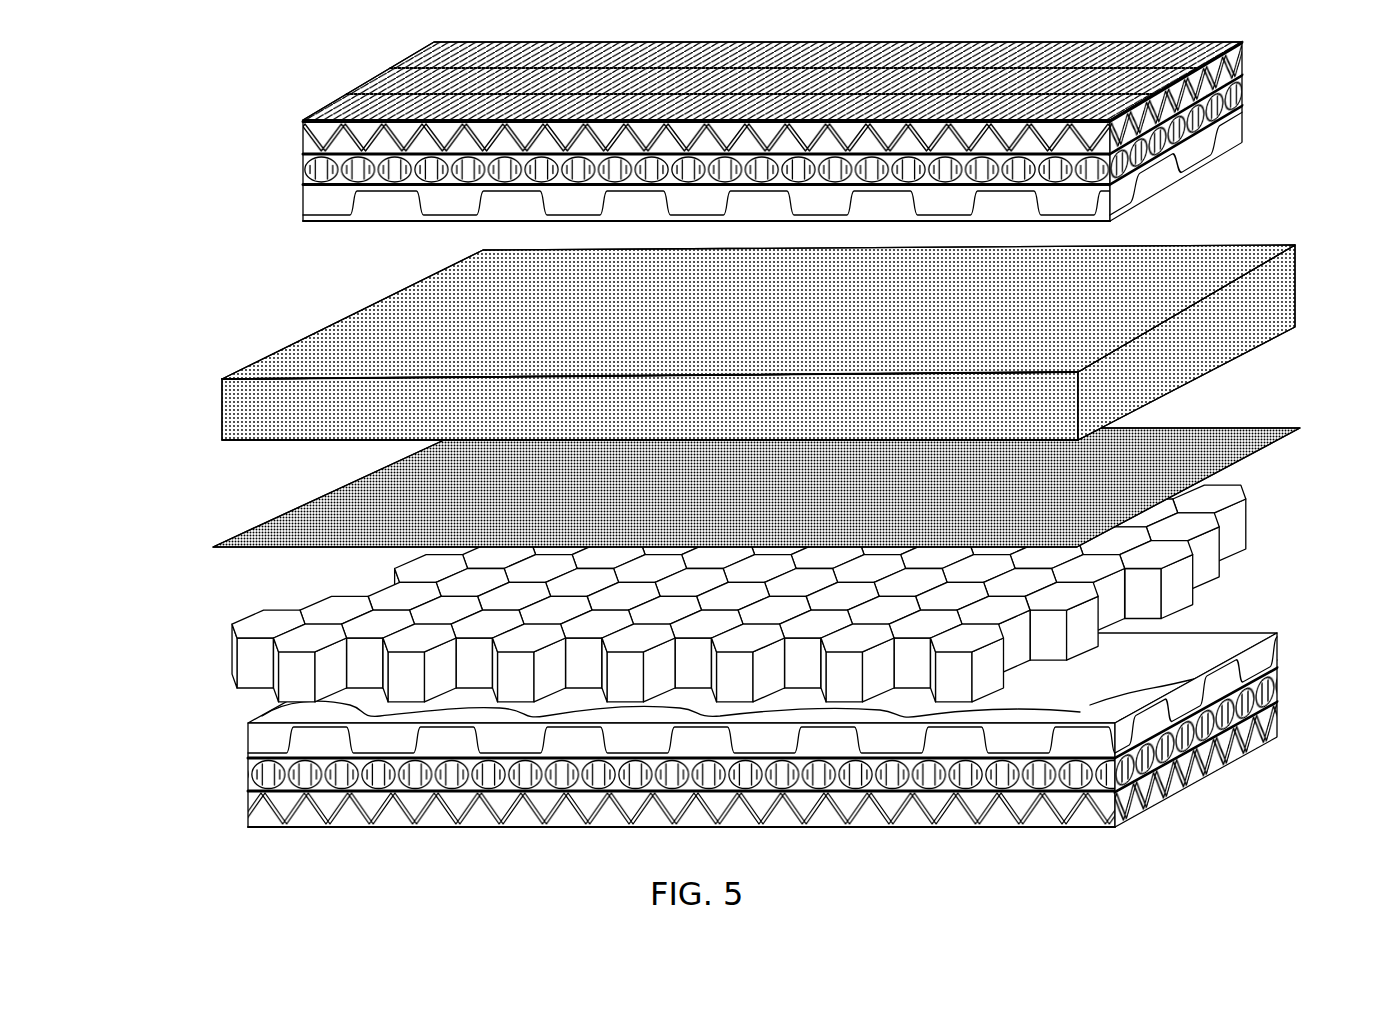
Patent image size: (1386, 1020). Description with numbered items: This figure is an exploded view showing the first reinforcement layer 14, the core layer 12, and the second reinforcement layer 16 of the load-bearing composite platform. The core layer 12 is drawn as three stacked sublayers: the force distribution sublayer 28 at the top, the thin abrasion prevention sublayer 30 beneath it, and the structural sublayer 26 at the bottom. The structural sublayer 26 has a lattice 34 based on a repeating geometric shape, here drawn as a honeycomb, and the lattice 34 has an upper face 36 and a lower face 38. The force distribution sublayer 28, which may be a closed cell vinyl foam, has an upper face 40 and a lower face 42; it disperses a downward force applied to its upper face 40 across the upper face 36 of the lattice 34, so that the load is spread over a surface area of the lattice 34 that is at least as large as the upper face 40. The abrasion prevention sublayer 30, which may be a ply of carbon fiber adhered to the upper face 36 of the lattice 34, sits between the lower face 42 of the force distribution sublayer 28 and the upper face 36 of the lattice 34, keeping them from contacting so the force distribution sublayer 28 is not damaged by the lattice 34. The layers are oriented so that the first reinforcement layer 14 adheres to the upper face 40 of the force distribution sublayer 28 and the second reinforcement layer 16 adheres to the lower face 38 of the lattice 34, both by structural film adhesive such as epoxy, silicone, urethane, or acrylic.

The core layer 12 is at (735, 434).
The first reinforcement layer 14 is at (725, 137).
The second reinforcement layer 16 is at (1280, 622).
The structural sublayer 26 is at (743, 577).
The force distribution sublayer 28 is at (769, 328).
The abrasion prevention sublayer 30 is at (1225, 428).
The lattice 34 is at (1200, 525).
The upper face of the lattice 36 is at (325, 608).
The lower face of the lattice 38 is at (253, 692).
The upper face of the force distribution sublayer 40 is at (1237, 243).
The lower face of the force distribution sublayer 42 is at (263, 442).